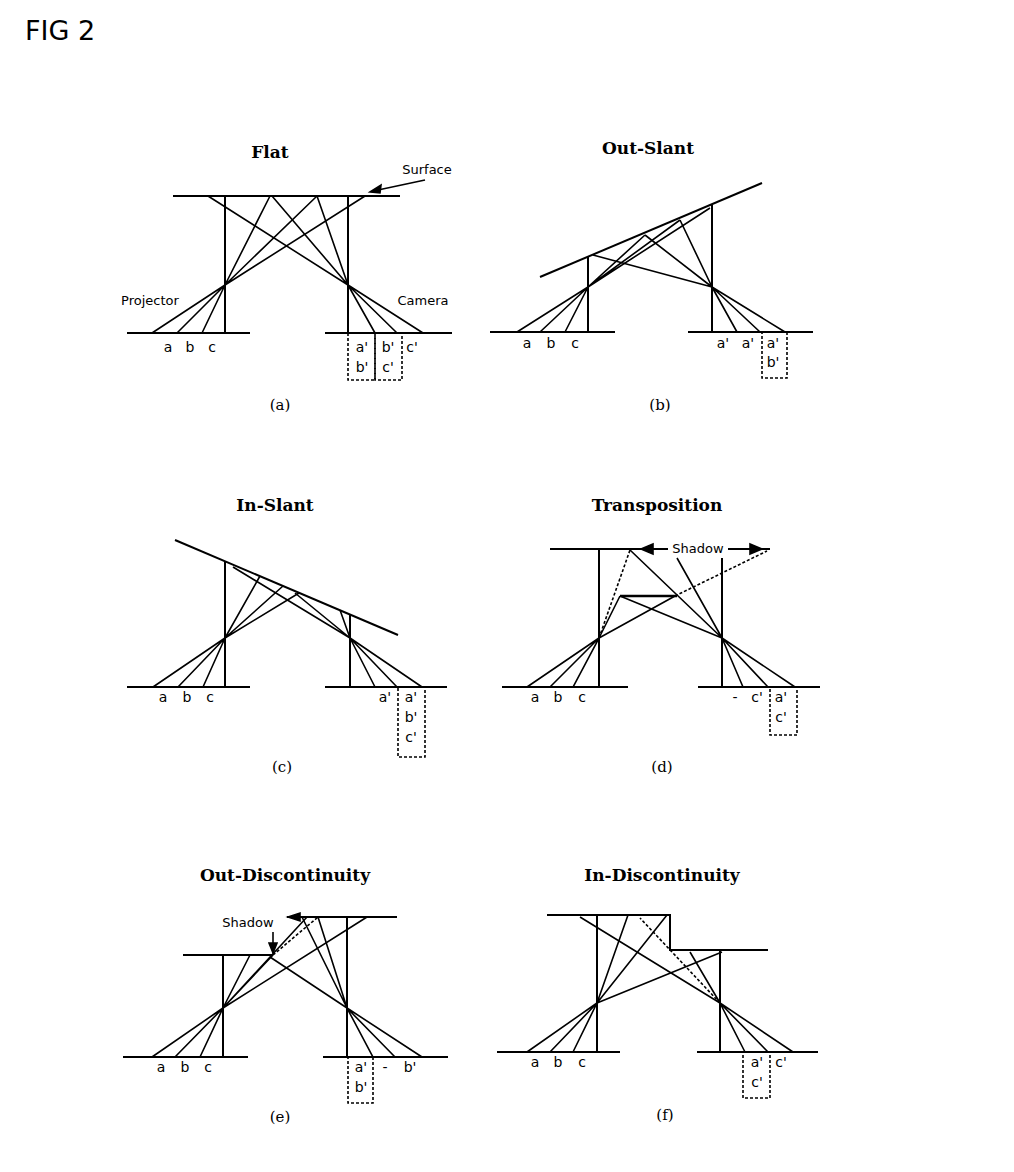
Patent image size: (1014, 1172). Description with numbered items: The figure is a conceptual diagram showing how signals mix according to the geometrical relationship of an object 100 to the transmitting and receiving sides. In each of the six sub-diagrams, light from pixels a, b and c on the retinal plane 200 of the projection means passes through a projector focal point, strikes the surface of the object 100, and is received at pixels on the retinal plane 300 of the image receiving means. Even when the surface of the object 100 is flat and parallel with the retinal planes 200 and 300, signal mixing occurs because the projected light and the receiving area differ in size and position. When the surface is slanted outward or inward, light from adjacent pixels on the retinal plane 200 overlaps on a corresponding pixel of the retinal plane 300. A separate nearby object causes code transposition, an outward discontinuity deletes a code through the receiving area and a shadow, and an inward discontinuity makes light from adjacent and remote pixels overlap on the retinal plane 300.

The object 100 is at (178, 197).
The retinal plane of the projection means 200 is at (135, 335).
The retinal plane of the image receiving means 300 is at (440, 335).